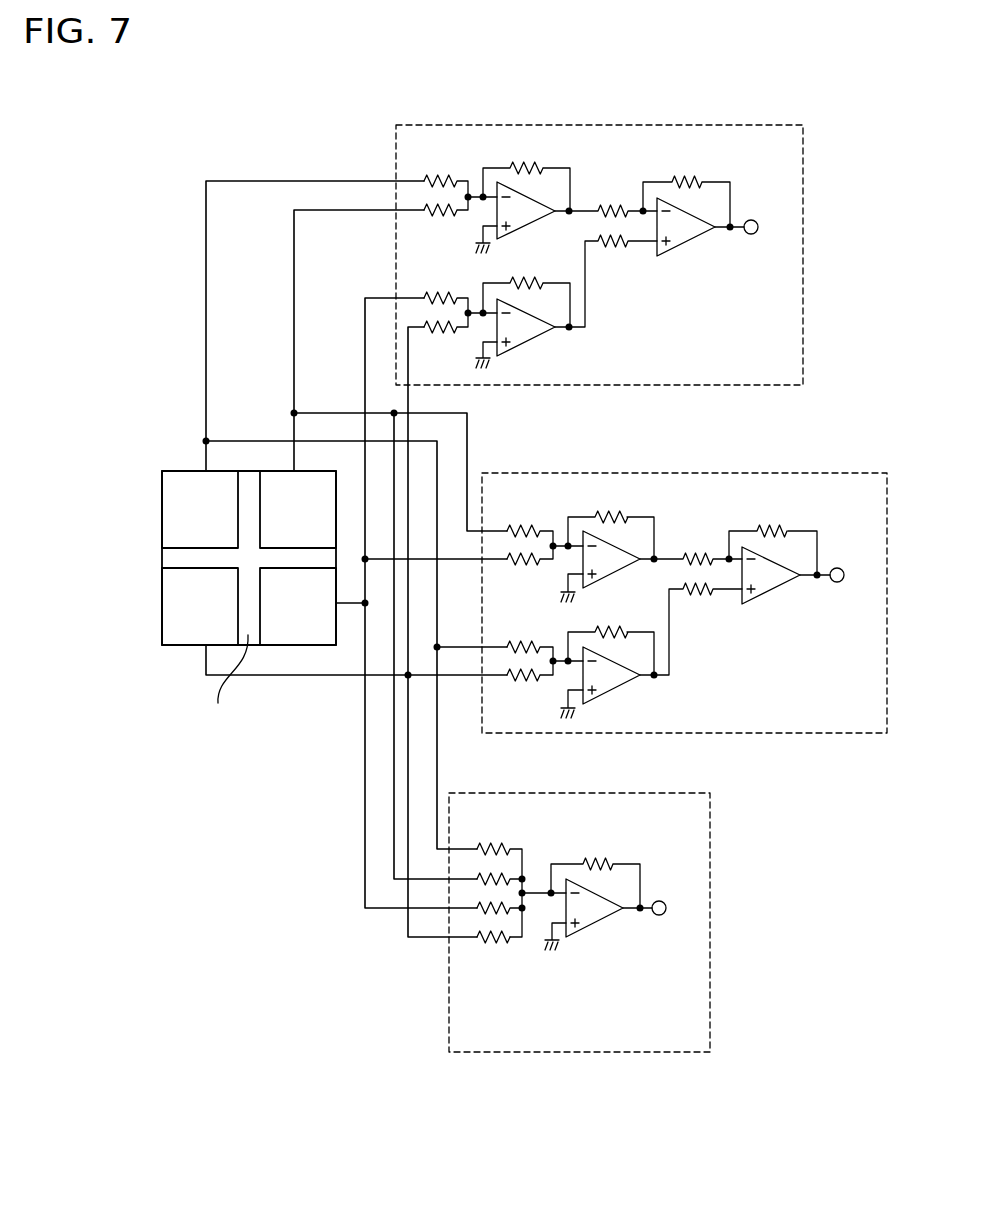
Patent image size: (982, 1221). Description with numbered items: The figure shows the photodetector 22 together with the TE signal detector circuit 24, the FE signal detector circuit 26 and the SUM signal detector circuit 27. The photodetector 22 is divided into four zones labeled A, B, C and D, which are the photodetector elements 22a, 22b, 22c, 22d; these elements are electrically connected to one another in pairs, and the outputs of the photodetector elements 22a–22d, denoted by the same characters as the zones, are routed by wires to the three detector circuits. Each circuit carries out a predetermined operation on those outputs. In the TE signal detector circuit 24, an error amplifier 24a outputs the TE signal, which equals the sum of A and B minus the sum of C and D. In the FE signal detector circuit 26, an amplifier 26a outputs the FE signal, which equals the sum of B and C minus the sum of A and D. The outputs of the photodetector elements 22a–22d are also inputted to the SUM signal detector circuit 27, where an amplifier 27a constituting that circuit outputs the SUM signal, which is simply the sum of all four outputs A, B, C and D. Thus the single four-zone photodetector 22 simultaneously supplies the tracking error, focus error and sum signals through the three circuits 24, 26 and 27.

The photodetector 22 is at (227, 558).
The photodetector element 22a is at (162, 522).
The photodetector element 22b is at (307, 470).
The photodetector element 22c is at (307, 647).
The photodetector element 22d is at (162, 622).
The TE signal detector circuit 24 is at (727, 355).
The error amplifier 24a is at (685, 242).
The FE signal detector circuit 26 is at (812, 710).
The amplifier 26a is at (772, 592).
The SUM signal detector circuit 27 is at (635, 1025).
The amplifier 27a is at (595, 927).